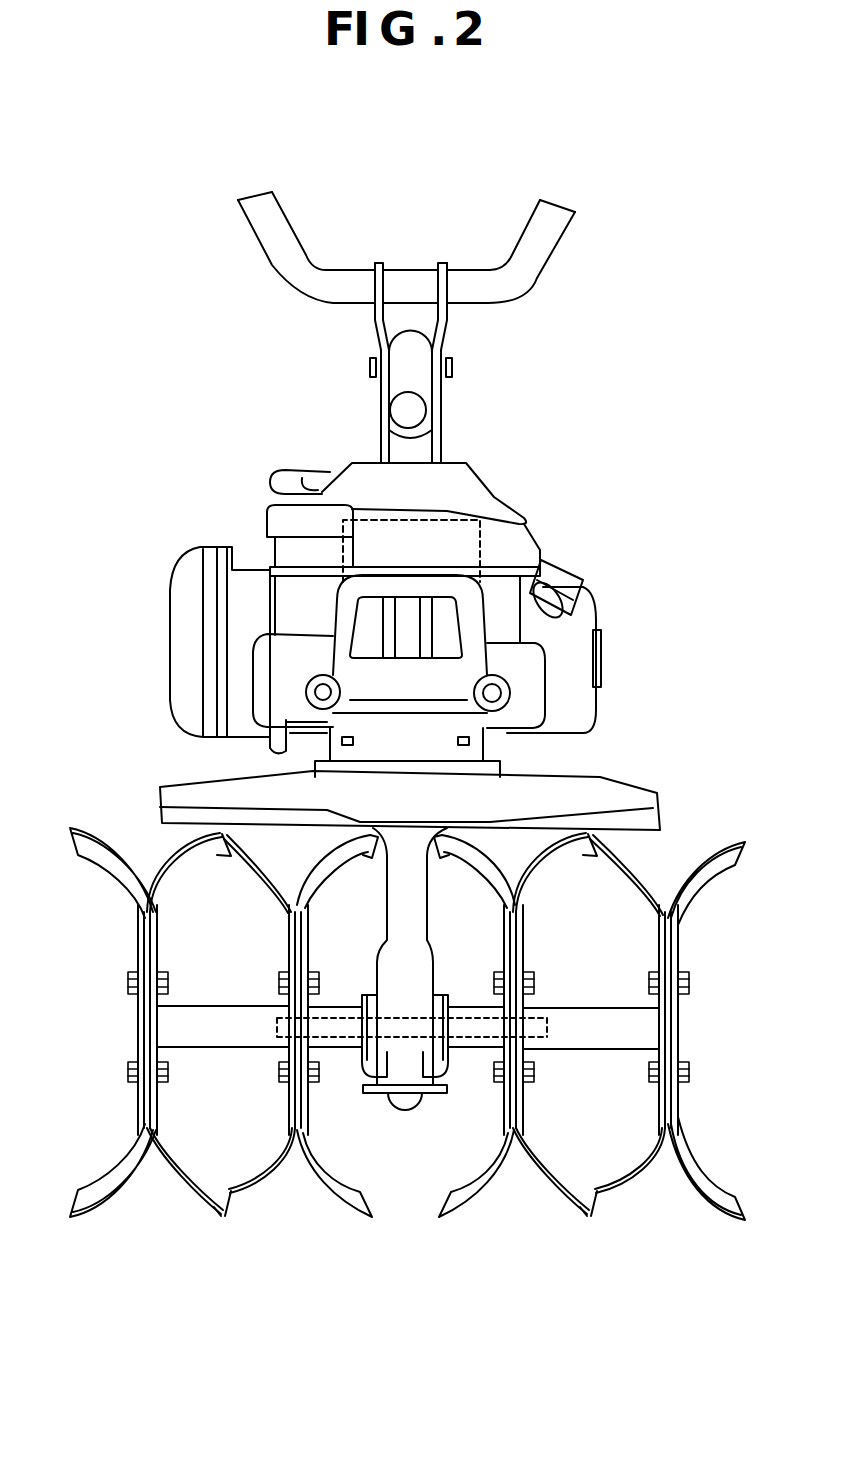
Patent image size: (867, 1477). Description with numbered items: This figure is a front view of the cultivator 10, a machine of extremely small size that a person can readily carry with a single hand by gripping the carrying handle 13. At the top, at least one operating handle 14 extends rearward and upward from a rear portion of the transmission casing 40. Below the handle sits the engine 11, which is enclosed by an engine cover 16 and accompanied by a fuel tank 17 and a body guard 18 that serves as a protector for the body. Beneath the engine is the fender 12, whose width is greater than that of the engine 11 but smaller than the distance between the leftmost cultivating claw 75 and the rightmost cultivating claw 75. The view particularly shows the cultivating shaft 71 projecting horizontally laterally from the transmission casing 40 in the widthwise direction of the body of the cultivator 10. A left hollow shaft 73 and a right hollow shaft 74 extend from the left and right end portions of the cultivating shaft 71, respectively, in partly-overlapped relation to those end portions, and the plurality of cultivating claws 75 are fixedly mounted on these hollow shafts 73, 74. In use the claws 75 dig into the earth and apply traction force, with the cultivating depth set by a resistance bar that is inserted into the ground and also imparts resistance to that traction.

The cultivator 10 is at (190, 135).
The engine 11 is at (443, 510).
The fender 12 is at (602, 782).
The carrying handle 13 is at (410, 387).
The operating handle 14 is at (465, 270).
The engine cover 16 is at (517, 507).
The fuel tank 17 is at (272, 552).
The body guard 18 is at (395, 583).
The transmission casing 40 is at (403, 1067).
The cultivating shaft 71 is at (547, 1037).
The left hollow shaft 73 is at (337, 1048).
The right hollow shaft 74 is at (217, 1045).
The cultivating claws 75 is at (650, 863).